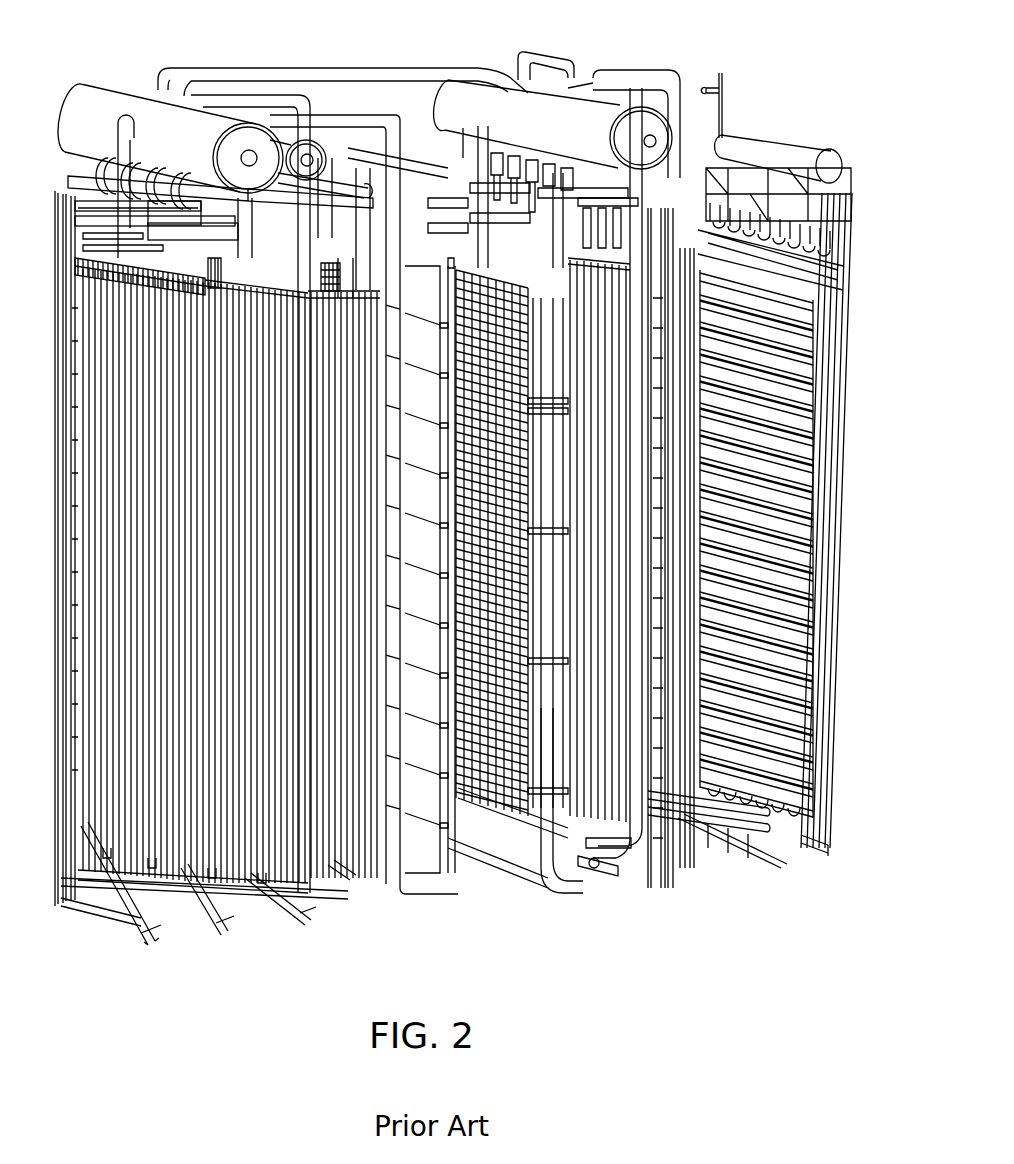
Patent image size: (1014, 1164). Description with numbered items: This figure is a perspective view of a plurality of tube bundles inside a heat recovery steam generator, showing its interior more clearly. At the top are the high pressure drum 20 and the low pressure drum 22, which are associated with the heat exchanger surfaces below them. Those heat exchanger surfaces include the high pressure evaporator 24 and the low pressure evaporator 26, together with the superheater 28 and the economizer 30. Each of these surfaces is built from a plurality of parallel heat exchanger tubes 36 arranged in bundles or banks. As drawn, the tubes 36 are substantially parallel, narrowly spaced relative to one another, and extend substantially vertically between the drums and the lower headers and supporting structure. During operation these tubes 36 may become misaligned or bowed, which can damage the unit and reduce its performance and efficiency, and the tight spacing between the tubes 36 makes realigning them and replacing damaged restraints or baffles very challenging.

The high pressure drum 20 is at (88, 86).
The low pressure drum 22 is at (608, 100).
The high pressure evaporator 24 is at (257, 822).
The low pressure evaporator 26 is at (596, 862).
The superheater 28 is at (100, 551).
The economizer 30 is at (828, 638).
The heat exchanger tubes 36 is at (105, 888).